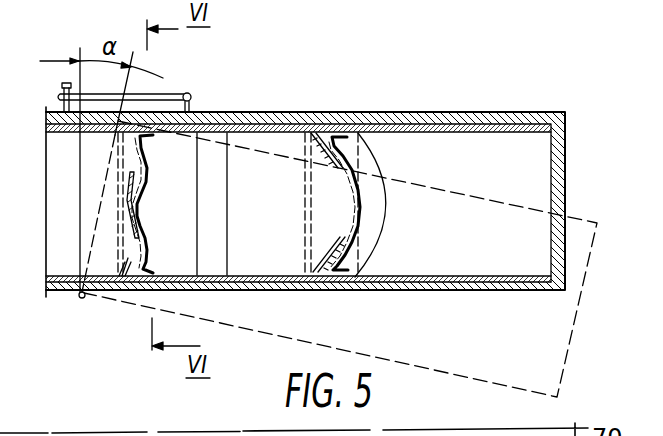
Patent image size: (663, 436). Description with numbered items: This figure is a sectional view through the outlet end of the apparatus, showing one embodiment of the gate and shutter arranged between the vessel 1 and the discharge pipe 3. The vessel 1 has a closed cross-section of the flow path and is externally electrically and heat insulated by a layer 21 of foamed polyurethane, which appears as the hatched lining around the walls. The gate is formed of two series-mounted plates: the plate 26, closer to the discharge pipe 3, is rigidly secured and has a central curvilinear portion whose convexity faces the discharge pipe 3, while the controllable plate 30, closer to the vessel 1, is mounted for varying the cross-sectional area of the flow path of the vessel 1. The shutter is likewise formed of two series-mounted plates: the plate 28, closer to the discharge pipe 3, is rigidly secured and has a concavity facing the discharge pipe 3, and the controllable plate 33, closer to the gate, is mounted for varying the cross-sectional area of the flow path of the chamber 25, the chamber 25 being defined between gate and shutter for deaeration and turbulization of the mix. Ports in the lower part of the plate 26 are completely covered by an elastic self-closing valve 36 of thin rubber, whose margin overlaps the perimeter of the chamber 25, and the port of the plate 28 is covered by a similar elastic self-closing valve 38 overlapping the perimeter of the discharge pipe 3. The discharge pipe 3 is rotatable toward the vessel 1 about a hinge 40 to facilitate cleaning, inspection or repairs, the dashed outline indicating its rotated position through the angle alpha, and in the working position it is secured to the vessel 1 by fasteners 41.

The vessel 1 is at (53, 112).
The discharge pipe 3 is at (392, 278).
The layer of foamed polyurethane 21 is at (375, 113).
The chamber 25 is at (243, 115).
The plate 26 is at (149, 183).
The plate 28 is at (327, 128).
The controllable plate 30 is at (117, 277).
The controllable plate 33 is at (310, 245).
The elastic self-closing valve 36 is at (157, 259).
The elastic self-closing valve 38 is at (352, 268).
The hinge 40 is at (79, 298).
The fasteners 41 is at (168, 94).